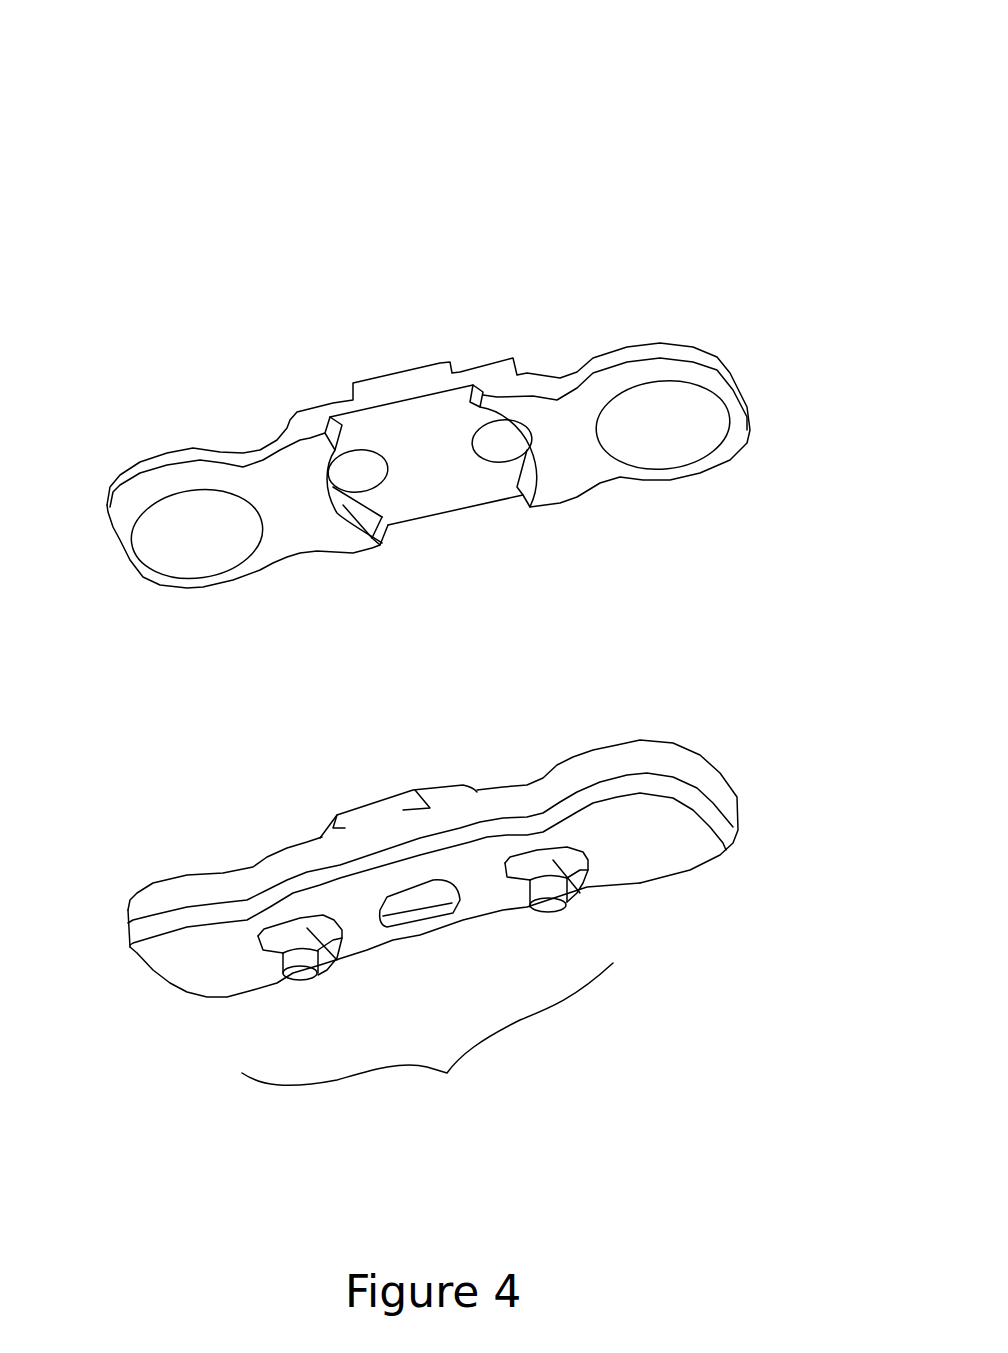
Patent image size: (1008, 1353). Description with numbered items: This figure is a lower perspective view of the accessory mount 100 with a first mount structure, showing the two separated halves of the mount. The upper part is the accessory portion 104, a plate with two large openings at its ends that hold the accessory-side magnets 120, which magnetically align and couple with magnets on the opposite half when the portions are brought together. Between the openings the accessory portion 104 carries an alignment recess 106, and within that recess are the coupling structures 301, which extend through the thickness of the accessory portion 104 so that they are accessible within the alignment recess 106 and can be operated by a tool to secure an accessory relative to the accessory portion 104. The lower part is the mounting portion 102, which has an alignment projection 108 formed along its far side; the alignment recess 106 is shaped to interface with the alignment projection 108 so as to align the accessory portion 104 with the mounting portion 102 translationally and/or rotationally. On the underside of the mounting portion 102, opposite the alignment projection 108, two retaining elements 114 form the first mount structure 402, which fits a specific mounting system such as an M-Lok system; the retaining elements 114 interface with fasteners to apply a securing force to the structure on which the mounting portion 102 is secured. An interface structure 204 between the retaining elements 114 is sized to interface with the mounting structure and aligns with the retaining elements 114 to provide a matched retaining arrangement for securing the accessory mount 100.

The accessory mount 100 is at (138, 68).
The mounting portion 102 is at (108, 843).
The accessory portion 104 is at (815, 405).
The alignment recess 106 is at (443, 500).
The alignment projection 108 is at (383, 807).
The retaining element 114 is at (273, 952).
The accessory-side magnets 120 is at (198, 553).
The interface structure 204 is at (343, 940).
The coupling structure 301 is at (357, 473).
The first mount structure 402 is at (427, 1039).